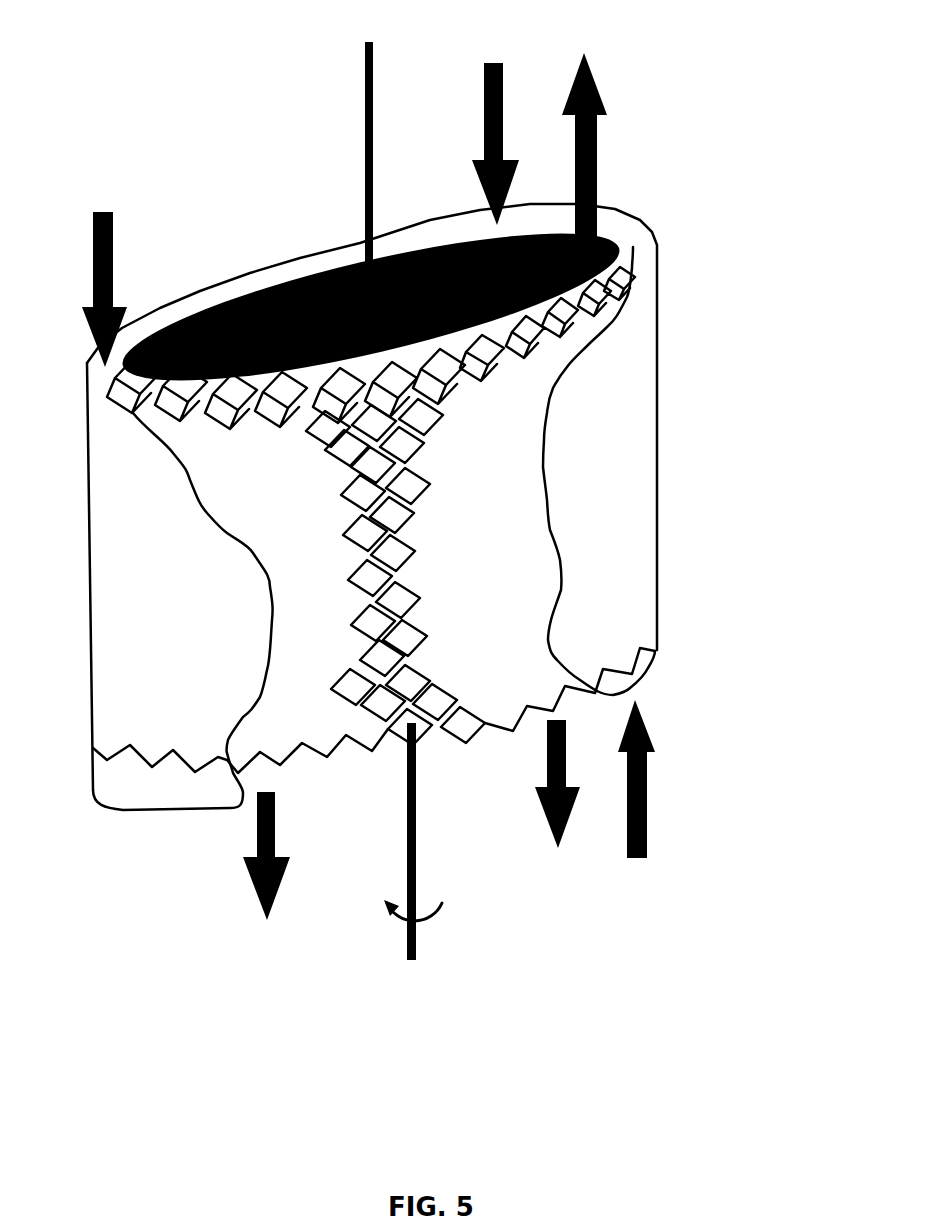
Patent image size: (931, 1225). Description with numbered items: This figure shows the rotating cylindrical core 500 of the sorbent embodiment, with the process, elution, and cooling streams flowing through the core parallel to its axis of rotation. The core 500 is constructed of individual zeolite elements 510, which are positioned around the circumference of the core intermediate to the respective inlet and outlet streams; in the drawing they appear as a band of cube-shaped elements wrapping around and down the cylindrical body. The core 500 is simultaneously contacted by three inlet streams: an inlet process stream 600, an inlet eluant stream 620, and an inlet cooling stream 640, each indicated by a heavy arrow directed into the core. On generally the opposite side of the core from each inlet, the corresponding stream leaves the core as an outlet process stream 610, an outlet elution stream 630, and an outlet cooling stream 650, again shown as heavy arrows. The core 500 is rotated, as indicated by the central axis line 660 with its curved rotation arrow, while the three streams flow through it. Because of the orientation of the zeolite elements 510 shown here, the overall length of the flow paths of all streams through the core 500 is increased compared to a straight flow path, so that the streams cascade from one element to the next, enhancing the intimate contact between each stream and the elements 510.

The cylindrical core 500 is at (455, 507).
The zeolite elements 510 is at (372, 392).
The inlet process stream 600 is at (95, 215).
The outlet process stream 610 is at (255, 843).
The inlet eluant stream 620 is at (486, 78).
The outlet elution stream 630 is at (547, 773).
The inlet cooling stream 640 is at (647, 827).
The outlet cooling stream 650 is at (597, 128).
The rotation axis 660 is at (375, 78).